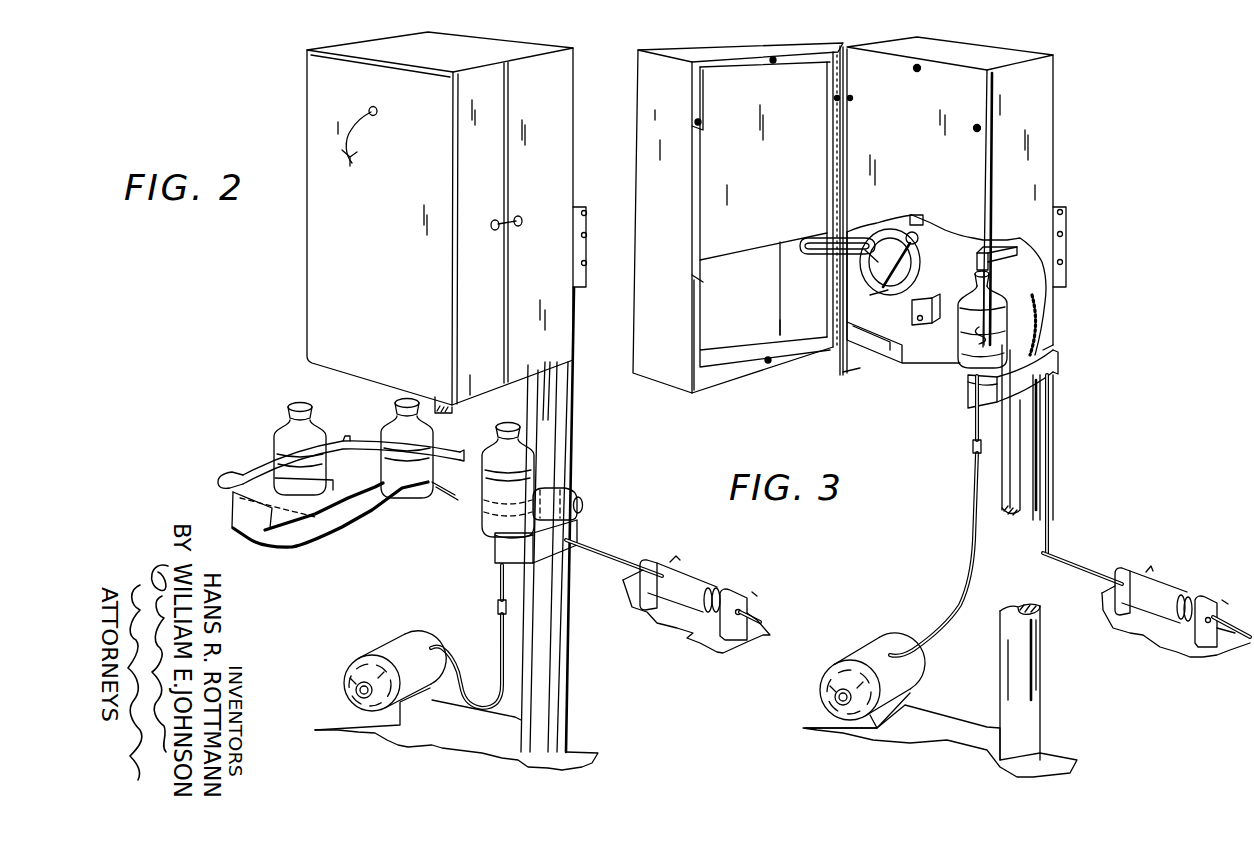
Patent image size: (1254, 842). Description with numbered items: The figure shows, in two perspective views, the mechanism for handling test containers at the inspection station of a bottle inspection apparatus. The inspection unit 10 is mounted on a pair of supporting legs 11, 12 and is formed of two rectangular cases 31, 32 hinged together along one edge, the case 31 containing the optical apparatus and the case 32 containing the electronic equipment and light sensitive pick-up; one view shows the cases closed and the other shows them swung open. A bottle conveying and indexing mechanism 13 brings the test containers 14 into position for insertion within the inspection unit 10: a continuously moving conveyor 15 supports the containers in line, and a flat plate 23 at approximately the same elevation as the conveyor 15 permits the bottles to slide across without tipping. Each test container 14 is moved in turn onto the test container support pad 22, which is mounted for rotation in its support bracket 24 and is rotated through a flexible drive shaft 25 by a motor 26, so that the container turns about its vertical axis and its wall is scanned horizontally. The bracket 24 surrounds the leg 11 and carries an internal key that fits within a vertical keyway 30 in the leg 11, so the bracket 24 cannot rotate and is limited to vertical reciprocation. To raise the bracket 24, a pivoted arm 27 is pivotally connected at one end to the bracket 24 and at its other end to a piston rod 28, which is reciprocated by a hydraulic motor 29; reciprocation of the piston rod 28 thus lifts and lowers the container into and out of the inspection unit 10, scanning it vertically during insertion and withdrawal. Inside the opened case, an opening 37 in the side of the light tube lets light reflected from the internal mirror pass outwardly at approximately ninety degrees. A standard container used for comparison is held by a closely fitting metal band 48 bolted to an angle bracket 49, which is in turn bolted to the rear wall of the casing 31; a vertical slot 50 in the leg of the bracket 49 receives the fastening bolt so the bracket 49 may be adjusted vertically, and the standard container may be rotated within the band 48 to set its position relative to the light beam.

In FIG. 2, the inspection unit 10 is at (282, 322).
In FIG. 3, the inspection unit 10 is at (1066, 183).
In FIG. 2, the supporting leg 11 is at (562, 443).
In FIG. 3, the supporting leg 11 is at (1030, 703).
In FIG. 2, the supporting leg 12 is at (457, 411).
In FIG. 2, the bottle conveying and indexing mechanism 13 is at (249, 457).
In FIG. 2, the test container 14 is at (291, 455).
In FIG. 3, the test container 14 is at (1004, 333).
In FIG. 2, the conveyor 15 is at (247, 528).
In FIG. 2, the test container support pad 22 is at (497, 530).
In FIG. 3, the test container support pad 22 is at (966, 380).
In FIG. 2, the flat plate 23 is at (348, 513).
In FIG. 2, the support bracket 24 is at (530, 553).
In FIG. 3, the support bracket 24 is at (1055, 367).
In FIG. 2, the flexible drive shaft 25 is at (500, 645).
In FIG. 3, the flexible drive shaft 25 is at (972, 590).
In FIG. 2, the motor 26 is at (405, 671).
In FIG. 3, the motor 26 is at (880, 676).
In FIG. 2, the pivoted arm 27 is at (578, 500).
In FIG. 3, the pivoted arm 27 is at (1053, 533).
In FIG. 2, the piston rod 28 is at (618, 564).
In FIG. 3, the piston rod 28 is at (1109, 577).
In FIG. 2, the hydraulic motor 29 is at (690, 587).
In FIG. 3, the hydraulic motor 29 is at (1163, 598).
In FIG. 2, the vertical keyway 30 is at (543, 410).
In FIG. 3, the vertical keyway 30 is at (1013, 428).
In FIG. 3, the case 31 is at (1030, 90).
In FIG. 3, the case 32 is at (785, 77).
In FIG. 3, the opening 37 is at (983, 330).
In FIG. 3, the metal band 48 is at (905, 303).
In FIG. 3, the angle bracket 49 is at (927, 305).
In FIG. 3, the vertical slot 50 is at (921, 354).